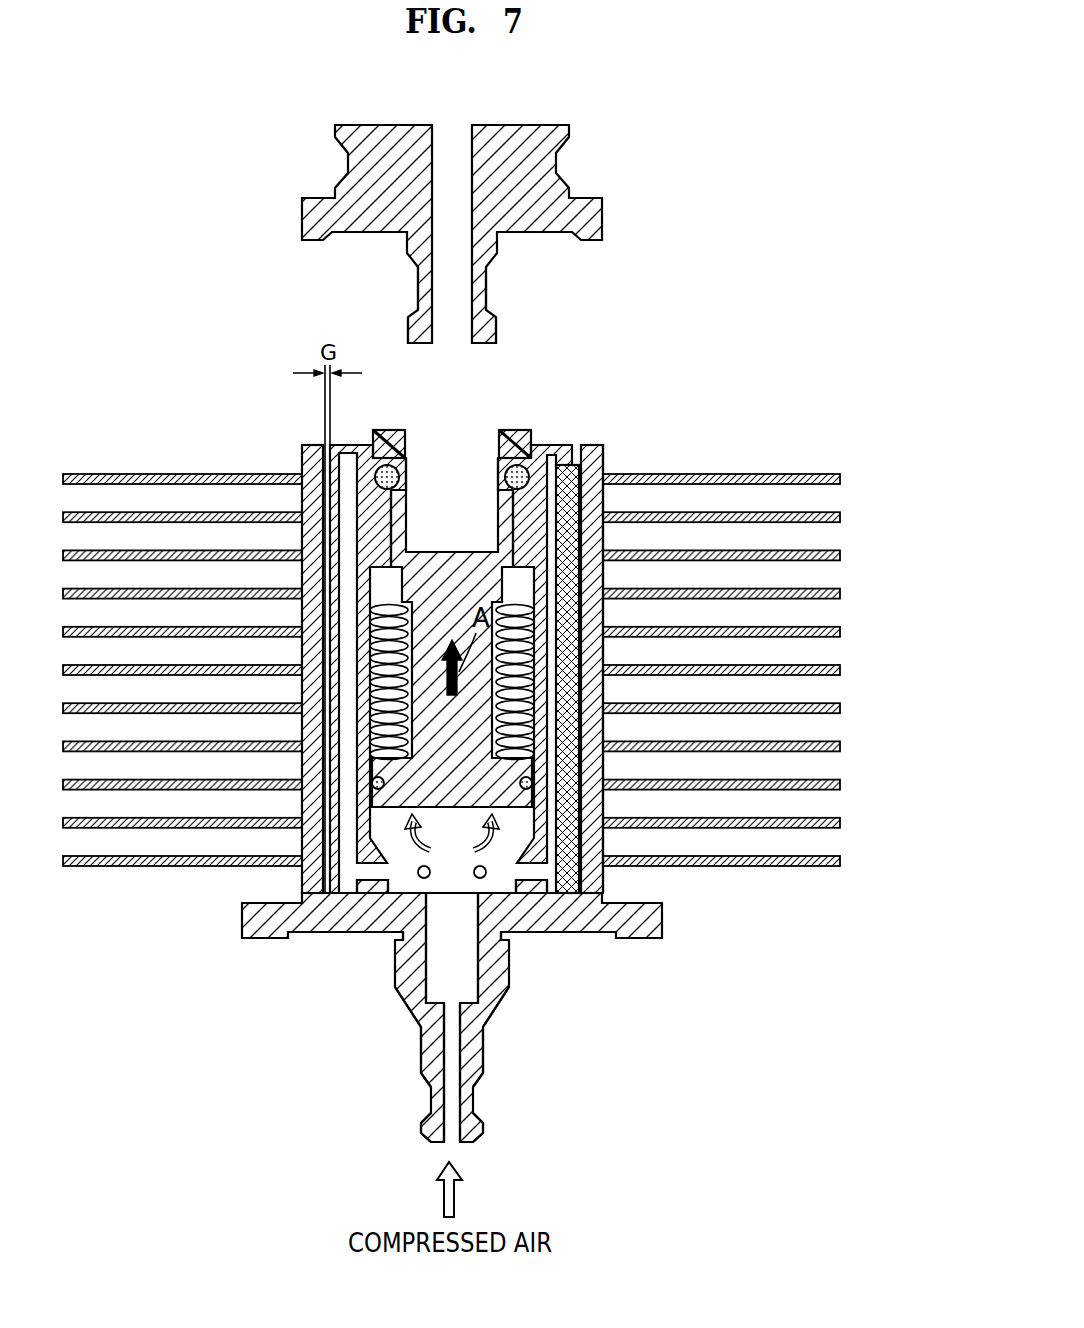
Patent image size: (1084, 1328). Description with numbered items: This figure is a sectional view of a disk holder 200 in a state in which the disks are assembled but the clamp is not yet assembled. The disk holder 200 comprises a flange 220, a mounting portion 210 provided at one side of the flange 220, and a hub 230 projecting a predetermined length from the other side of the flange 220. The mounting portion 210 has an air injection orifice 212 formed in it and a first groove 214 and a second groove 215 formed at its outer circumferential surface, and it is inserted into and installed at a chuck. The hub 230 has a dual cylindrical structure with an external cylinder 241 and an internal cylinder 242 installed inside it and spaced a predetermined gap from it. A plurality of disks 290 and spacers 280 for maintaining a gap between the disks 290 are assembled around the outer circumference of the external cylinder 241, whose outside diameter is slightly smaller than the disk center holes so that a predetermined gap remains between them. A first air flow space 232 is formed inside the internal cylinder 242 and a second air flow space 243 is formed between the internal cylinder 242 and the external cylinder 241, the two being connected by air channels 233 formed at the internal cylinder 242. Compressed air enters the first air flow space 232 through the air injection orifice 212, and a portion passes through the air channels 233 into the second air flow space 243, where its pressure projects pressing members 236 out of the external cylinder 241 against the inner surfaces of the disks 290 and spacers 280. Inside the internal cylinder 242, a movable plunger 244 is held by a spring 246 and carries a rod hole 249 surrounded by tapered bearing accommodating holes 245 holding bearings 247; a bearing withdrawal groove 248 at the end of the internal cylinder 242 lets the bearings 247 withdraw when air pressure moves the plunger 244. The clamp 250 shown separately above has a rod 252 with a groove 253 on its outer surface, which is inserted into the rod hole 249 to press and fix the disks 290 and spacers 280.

The disk holder 200 is at (212, 995).
The mounting portion 210 is at (421, 1048).
The air injection orifice 212 is at (447, 1098).
The first groove 214 is at (472, 1100).
The second groove 215 is at (393, 947).
The flange 220 is at (664, 922).
The hub 230 is at (618, 728).
The first air flow space 232 is at (458, 885).
The air channels 233 is at (526, 878).
The pressing members 236 is at (568, 578).
The external cylinder 241 is at (334, 722).
The internal cylinder 242 is at (545, 667).
The second air flow space 243 is at (533, 779).
The movable plunger 244 is at (376, 648).
The bearing accommodating holes 245 is at (498, 468).
The spring 246 is at (515, 680).
The bearings 247 is at (505, 478).
The bearing withdrawal groove 248 is at (377, 447).
The rod hole 249 is at (472, 533).
The clamp 250 is at (588, 156).
The rod 252 is at (485, 334).
The groove 253 is at (487, 288).
The spacers 280 is at (604, 500).
The disks 290 is at (842, 518).